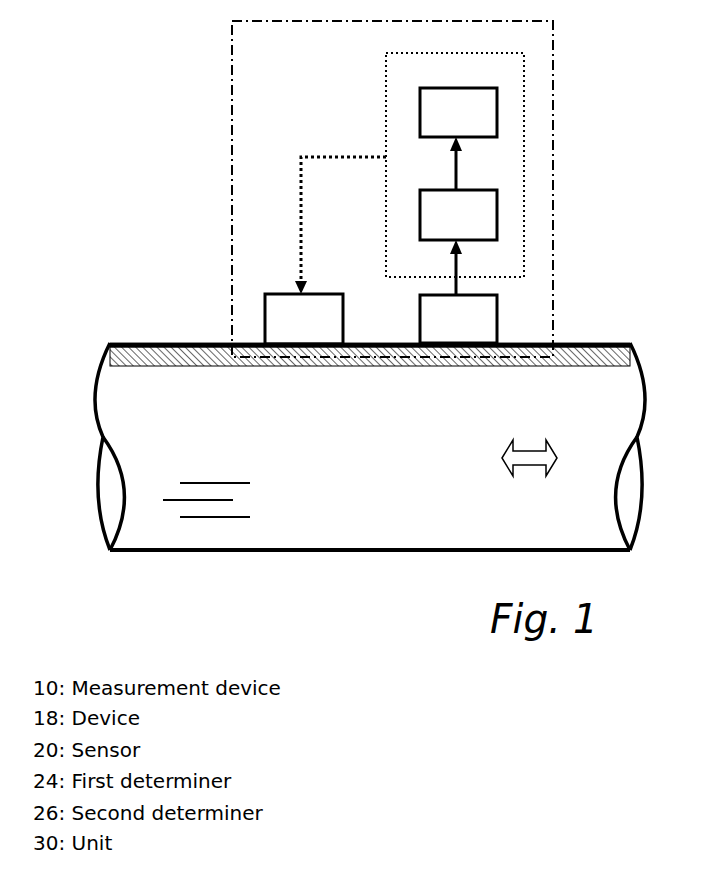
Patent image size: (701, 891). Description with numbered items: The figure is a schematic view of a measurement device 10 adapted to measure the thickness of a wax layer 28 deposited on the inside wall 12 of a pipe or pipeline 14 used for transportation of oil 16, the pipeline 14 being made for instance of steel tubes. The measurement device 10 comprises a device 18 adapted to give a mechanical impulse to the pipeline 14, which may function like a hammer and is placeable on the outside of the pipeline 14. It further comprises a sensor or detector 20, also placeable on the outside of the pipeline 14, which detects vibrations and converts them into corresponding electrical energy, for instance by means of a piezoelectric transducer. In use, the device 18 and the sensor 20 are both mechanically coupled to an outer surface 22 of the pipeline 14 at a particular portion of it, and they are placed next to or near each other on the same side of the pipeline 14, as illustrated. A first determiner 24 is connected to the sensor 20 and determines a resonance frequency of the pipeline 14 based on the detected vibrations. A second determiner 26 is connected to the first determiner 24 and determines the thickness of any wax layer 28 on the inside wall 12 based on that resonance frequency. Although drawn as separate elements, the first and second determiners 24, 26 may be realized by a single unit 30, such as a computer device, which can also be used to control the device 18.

The measurement device 10 is at (232, 122).
The inside wall 12 is at (368, 355).
The pipeline 14 is at (153, 336).
The oil 16 is at (456, 475).
The device 18 is at (265, 310).
The sensor 20 is at (497, 302).
The outer surface 22 is at (388, 355).
The first determiner 24 is at (497, 200).
The second determiner 26 is at (497, 97).
The wax layer 28 is at (600, 345).
The unit 30 is at (385, 142).